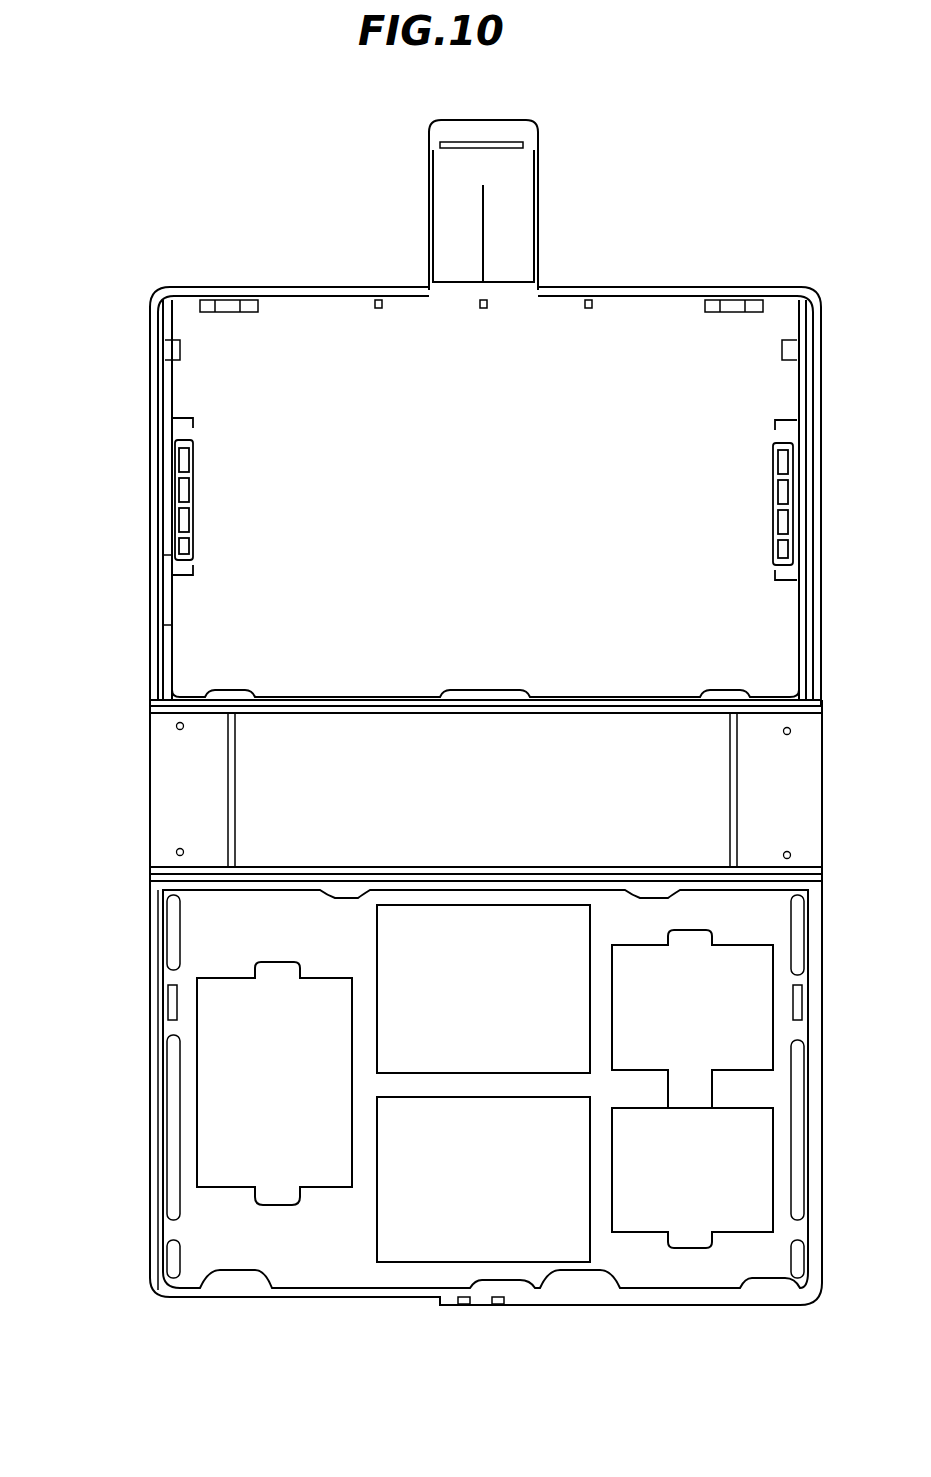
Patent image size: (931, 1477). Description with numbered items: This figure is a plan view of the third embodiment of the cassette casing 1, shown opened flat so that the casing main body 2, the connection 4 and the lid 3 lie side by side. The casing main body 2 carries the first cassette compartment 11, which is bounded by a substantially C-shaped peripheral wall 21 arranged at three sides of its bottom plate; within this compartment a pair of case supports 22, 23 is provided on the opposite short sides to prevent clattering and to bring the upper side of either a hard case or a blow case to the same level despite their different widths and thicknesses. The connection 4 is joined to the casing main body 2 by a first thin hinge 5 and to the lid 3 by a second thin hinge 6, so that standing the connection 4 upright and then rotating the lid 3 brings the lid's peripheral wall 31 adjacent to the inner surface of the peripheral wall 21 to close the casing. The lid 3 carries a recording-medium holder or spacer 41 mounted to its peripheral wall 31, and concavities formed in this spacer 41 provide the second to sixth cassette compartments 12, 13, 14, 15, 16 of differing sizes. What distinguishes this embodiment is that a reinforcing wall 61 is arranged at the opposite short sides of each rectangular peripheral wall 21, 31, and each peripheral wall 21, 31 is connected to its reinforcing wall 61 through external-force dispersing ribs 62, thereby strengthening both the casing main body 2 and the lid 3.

The cassette casing 1 is at (48, 720).
The casing main body 2 is at (138, 660).
The lid 3 is at (148, 940).
The connection 4 is at (158, 790).
The first thin hinge 5 is at (148, 707).
The second thin hinge 6 is at (150, 872).
The first cassette compartment 11 is at (500, 525).
The second cassette compartment 12 is at (500, 1205).
The third cassette compartment 13 is at (500, 1005).
The fourth cassette compartment 14 is at (700, 1207).
The fifth cassette compartment 15 is at (700, 1021).
The sixth cassette compartment 16 is at (290, 1101).
The peripheral wall 21 is at (180, 636).
The case support 22 is at (215, 566).
The case support 23 is at (770, 578).
The peripheral wall 31 is at (180, 1153).
The recording-medium holder or spacer 41 is at (205, 1233).
The reinforcing wall 61 is at (172, 585).
The external-force dispersing rib 62 is at (172, 562).